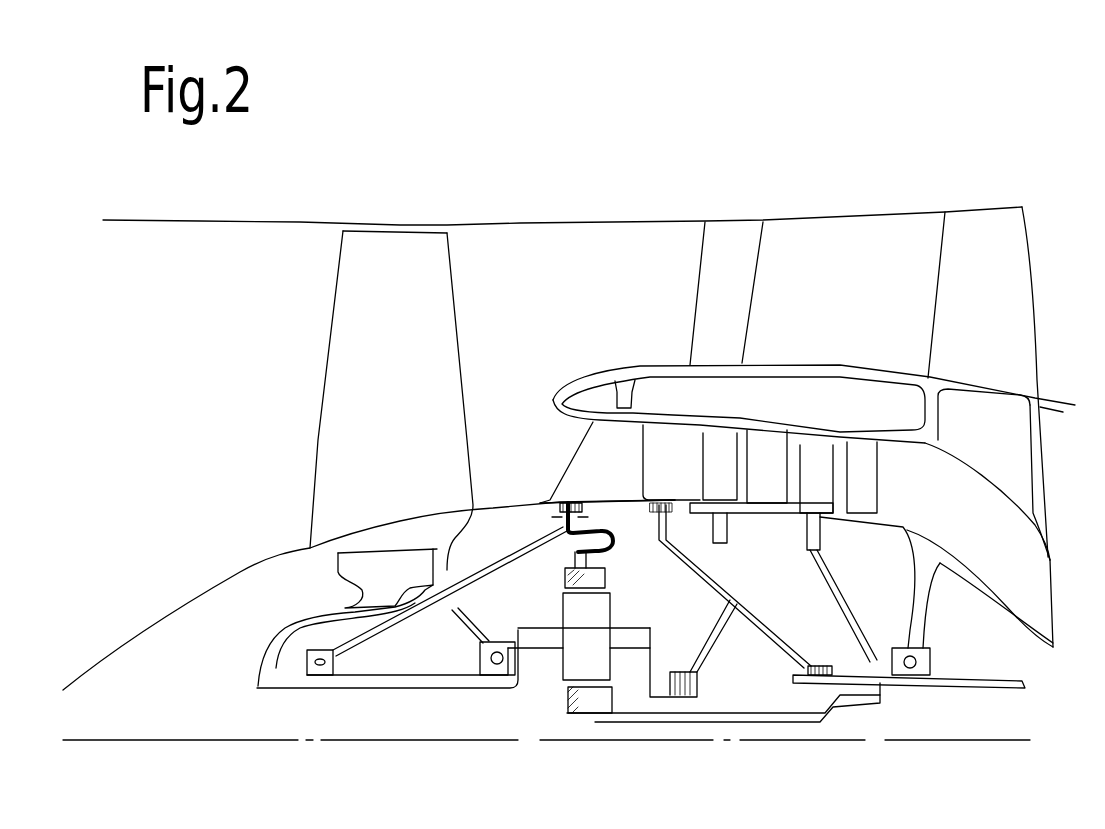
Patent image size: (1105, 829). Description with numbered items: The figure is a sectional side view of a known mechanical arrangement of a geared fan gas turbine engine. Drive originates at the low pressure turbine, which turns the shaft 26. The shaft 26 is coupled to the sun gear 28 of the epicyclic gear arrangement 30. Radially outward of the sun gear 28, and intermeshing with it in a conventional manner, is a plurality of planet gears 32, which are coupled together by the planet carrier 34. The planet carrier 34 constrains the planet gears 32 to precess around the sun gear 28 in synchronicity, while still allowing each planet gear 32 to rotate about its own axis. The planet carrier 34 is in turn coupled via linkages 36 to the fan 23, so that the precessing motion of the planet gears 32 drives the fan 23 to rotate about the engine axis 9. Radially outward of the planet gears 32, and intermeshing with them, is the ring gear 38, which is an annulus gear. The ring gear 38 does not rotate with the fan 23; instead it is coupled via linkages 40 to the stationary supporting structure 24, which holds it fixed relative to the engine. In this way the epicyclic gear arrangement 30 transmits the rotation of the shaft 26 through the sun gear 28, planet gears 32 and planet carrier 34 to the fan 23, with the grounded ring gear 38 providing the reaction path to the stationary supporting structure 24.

The engine axis 9 is at (270, 742).
The fan 23 is at (355, 432).
The stationary supporting structure 24 is at (600, 458).
The shaft 26 is at (900, 688).
The sun gear 28 is at (580, 713).
The epicyclic gear arrangement 30 is at (535, 682).
The planet gears 32 is at (573, 665).
The planet carrier 34 is at (600, 713).
The linkages 36 is at (512, 690).
The ring gear 38 is at (565, 579).
The linkages 40 is at (612, 546).